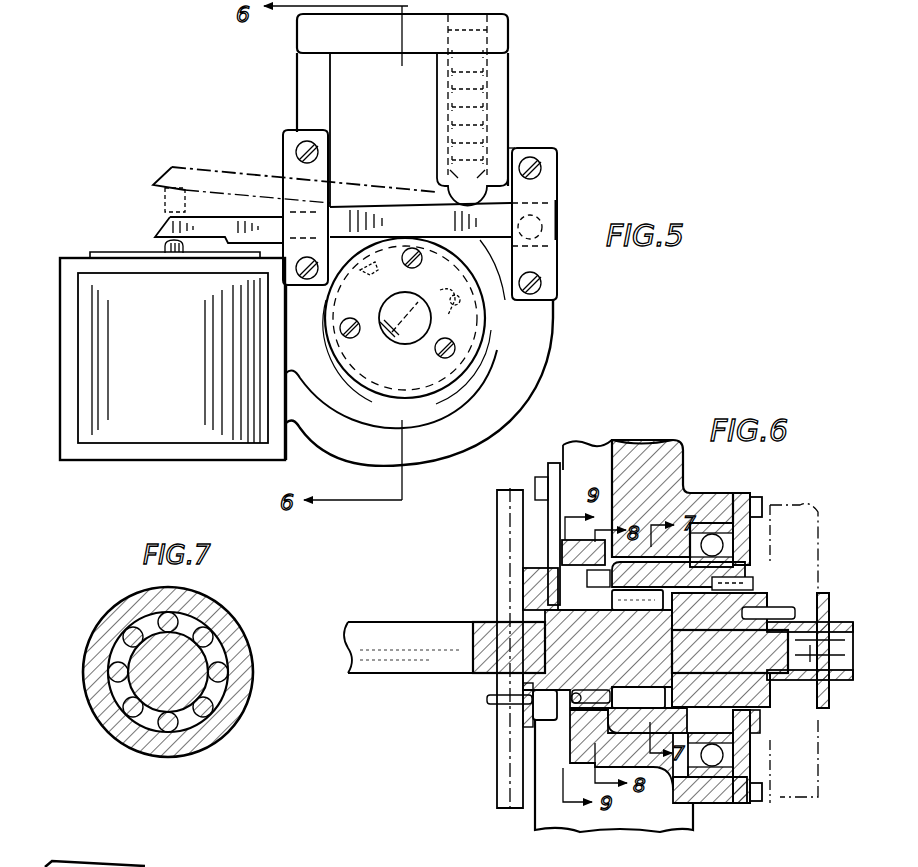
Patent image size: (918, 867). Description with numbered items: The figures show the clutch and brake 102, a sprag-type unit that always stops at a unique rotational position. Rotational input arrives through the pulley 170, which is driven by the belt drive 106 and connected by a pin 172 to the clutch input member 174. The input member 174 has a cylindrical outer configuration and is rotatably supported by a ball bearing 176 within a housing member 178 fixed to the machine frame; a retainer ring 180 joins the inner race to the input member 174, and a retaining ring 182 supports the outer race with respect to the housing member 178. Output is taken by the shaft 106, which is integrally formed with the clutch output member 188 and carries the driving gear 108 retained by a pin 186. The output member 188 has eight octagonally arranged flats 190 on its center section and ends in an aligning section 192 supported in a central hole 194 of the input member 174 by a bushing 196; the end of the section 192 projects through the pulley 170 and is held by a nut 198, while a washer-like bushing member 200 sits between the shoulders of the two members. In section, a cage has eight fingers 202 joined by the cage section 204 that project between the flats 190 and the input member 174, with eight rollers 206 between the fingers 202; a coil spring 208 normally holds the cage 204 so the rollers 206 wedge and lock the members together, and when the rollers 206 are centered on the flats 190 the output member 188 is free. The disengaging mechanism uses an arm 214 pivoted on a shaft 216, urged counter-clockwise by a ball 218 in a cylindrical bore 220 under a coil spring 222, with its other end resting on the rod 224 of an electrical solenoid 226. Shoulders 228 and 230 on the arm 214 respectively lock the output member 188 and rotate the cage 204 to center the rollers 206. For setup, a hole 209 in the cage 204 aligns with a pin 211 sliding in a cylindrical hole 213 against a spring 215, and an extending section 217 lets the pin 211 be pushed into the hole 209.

In FIG. 6, the clutch and brake 102 is at (697, 397).
In FIG. 6, the shaft 106 is at (450, 622).
In FIG. 6, the driving gear 108 is at (504, 489).
In FIG. 6, the pulley 170 is at (812, 521).
In FIG. 6, the pin 172 is at (775, 606).
In FIG. 6, the clutch input member 174 is at (682, 576).
In FIG. 7, the clutch input member 174 is at (225, 644).
In FIG. 6, the ball bearing 176 is at (733, 500).
In FIG. 5, the housing member 178 is at (540, 348).
In FIG. 6, the housing member 178 is at (698, 497).
In FIG. 6, the retainer ring 180 is at (770, 555).
In FIG. 6, the retaining ring 182 is at (760, 497).
In FIG. 6, the pin 186 is at (509, 647).
In FIG. 6, the clutch output member 188 is at (597, 659).
In FIG. 7, the clutch output member 188 is at (168, 672).
In FIG. 6, the flats 190 is at (655, 620).
In FIG. 7, the flats 190 is at (200, 613).
In FIG. 6, the aligning section 192 is at (804, 651).
In FIG. 6, the central hole 194 is at (730, 651).
In FIG. 6, the bushing 196 is at (818, 605).
In FIG. 6, the nut 198 is at (830, 620).
In FIG. 6, the washer-like bushing member 200 is at (719, 610).
In FIG. 7, the fingers 202 is at (160, 600).
In FIG. 6, the cage section 204 is at (618, 601).
In FIG. 6, the rollers 206 is at (661, 665).
In FIG. 6, the coil spring 208 is at (658, 755).
In FIG. 6, the hole 209 is at (638, 689).
In FIG. 6, the pin 211 is at (559, 670).
In FIG. 6, the cylindrical hole 213 is at (530, 720).
In FIG. 5, the arm 214 is at (238, 185).
In FIG. 6, the arm 214 is at (548, 545).
In FIG. 6, the spring 215 is at (542, 720).
In FIG. 5, the shaft 216 is at (560, 214).
In FIG. 6, the extending section 217 is at (500, 705).
In FIG. 5, the ball 218 is at (492, 168).
In FIG. 5, the cylindrical bore 220 is at (447, 116).
In FIG. 5, the coil spring 222 is at (490, 92).
In FIG. 5, the rod 224 is at (165, 244).
In FIG. 5, the electrical solenoid 226 is at (95, 352).
In FIG. 6, the shoulder 228 is at (540, 589).
In FIG. 6, the shoulder 230 is at (583, 552).